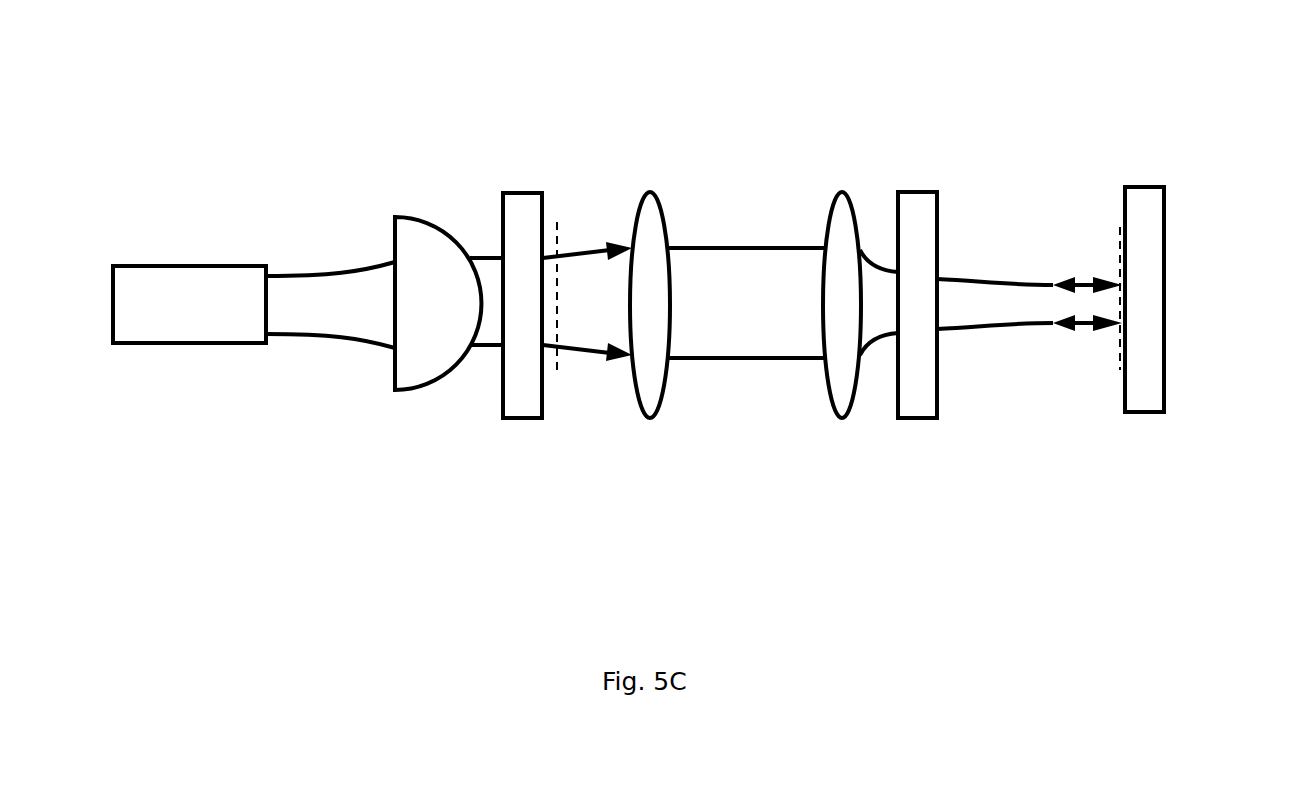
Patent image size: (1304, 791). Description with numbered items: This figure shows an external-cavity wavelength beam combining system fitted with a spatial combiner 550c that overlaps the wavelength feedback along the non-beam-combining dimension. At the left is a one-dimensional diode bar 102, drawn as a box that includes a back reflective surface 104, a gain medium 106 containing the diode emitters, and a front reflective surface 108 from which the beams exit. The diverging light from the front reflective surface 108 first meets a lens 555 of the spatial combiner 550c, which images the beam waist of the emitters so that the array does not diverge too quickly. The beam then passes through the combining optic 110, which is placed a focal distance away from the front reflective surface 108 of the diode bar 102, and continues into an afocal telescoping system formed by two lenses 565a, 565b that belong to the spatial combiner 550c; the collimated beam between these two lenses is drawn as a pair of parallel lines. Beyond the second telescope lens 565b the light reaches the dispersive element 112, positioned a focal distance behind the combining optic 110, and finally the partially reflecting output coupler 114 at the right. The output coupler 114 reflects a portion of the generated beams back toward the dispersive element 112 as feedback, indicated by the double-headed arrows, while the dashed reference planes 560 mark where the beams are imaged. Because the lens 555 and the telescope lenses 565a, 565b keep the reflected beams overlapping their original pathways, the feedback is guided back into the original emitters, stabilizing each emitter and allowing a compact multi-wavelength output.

The diode bar 102 is at (275, 118).
The back reflective surface 104 is at (116, 260).
The gain medium 106 is at (177, 263).
The front reflective surface 108 is at (267, 262).
The combining optic 110 is at (522, 192).
The dispersive element 112 is at (921, 175).
The partially reflecting output coupler 114 is at (1150, 175).
The spatial combiner 550c is at (579, 311).
The lens 555 is at (400, 393).
The reference plane 560 is at (558, 222).
The afocal telescoping system lens 565a is at (652, 192).
The afocal telescoping system lens 565b is at (842, 192).